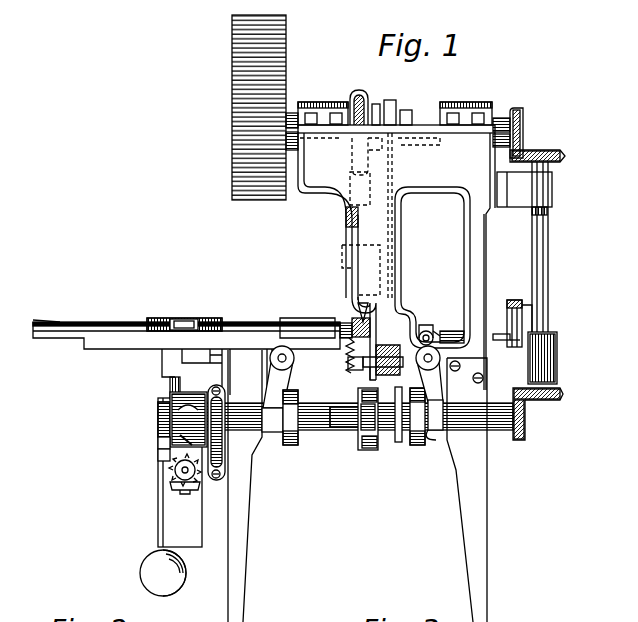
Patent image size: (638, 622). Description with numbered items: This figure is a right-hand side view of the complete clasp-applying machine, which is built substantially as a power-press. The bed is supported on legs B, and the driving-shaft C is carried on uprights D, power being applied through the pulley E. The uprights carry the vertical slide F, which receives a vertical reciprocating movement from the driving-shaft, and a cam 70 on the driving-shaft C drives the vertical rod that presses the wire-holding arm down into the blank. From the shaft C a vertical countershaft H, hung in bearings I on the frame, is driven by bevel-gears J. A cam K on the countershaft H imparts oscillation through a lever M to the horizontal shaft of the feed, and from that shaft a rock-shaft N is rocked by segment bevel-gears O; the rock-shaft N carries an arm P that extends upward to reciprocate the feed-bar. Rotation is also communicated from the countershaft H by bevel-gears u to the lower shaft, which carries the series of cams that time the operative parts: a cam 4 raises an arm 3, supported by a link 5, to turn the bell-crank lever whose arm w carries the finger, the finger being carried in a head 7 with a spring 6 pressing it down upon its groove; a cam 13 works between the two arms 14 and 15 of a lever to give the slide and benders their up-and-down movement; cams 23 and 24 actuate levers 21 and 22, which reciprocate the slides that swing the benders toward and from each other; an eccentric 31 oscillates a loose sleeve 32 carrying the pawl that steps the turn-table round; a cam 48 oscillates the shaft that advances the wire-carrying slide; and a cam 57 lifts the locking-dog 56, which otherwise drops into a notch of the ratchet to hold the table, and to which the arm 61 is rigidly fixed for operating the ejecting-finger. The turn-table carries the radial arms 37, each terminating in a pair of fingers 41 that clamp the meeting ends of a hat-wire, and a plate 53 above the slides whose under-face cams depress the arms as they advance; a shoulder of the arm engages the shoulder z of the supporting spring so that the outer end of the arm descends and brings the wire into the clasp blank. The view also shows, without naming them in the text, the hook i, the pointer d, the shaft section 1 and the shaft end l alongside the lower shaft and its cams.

The pulley E is at (255, 107).
The driving-shaft C is at (396, 200).
The cam 70 is at (375, 107).
The uprights D is at (422, 262).
The vertical slide F is at (351, 272).
The hook i is at (377, 308).
The pointer d is at (357, 306).
The head 7 is at (348, 318).
The arm of bell-crank lever w is at (378, 340).
The spring 6 is at (346, 350).
The arm P is at (428, 330).
The rock-shaft N is at (441, 323).
The segment bevel-gears O is at (456, 329).
The bevel-gears J is at (529, 135).
The bearings I is at (527, 278).
The vertical countershaft H is at (549, 252).
The cam K is at (523, 315).
The lever M is at (504, 331).
The shoulder of spring z is at (509, 348).
The bevel-gears u is at (538, 414).
The radial arm 37 is at (186, 327).
The cam 4 is at (187, 320).
The plate 53 is at (184, 317).
The shaft 1 is at (356, 416).
The link 5 is at (339, 417).
The shaft end l is at (467, 416).
The legs B is at (357, 486).
The lever 21 is at (278, 389).
The lever 22 is at (429, 393).
The cam 23 is at (290, 426).
The cam 24 is at (416, 424).
The arm 3 is at (398, 423).
The cam 13 is at (372, 410).
The arm of lever 14 is at (361, 397).
The arm of lever 15 is at (361, 443).
The eccentric 31 is at (216, 432).
The loose sleeve 32 is at (169, 386).
The cam 48 is at (157, 412).
The fingers 41 is at (188, 443).
The cam 57 is at (157, 443).
The locking-dog 56 is at (157, 456).
The arm 61 is at (171, 497).